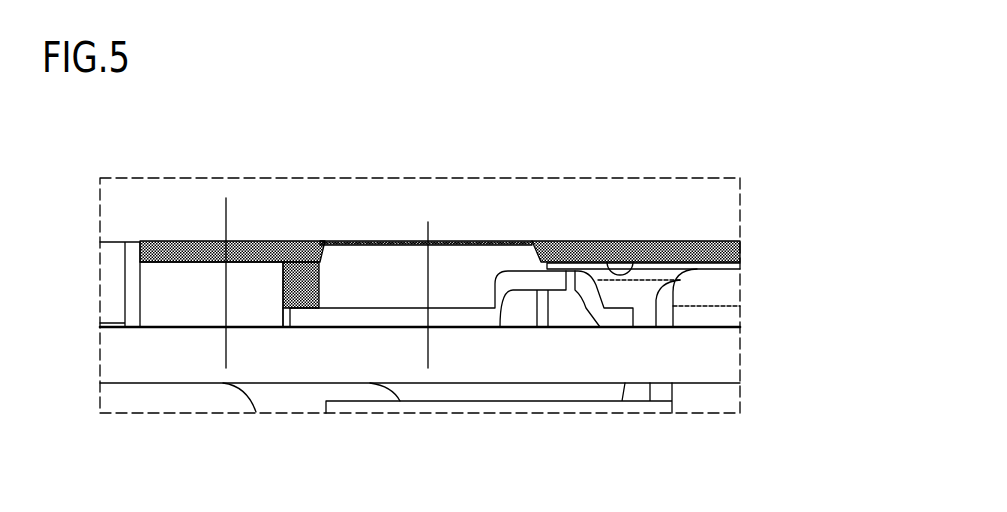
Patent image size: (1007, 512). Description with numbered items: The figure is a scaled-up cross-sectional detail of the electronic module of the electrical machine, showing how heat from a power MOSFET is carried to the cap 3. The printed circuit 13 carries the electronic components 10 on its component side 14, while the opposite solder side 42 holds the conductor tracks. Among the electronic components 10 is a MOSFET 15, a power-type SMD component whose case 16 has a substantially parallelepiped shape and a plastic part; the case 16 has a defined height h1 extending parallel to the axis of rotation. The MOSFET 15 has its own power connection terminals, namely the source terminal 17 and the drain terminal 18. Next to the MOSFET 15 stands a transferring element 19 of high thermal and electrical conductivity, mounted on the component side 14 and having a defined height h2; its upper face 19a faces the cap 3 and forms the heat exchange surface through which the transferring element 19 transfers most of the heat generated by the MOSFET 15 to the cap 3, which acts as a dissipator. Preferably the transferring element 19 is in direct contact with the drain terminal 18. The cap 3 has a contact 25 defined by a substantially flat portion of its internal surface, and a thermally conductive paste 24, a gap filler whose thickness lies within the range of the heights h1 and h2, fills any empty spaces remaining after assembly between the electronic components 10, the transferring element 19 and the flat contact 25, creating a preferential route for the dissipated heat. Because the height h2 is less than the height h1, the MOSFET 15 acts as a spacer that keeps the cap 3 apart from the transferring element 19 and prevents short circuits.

The cap 3 is at (201, 205).
The electronic components 10 is at (667, 245).
The printed circuit 13 is at (712, 354).
The component side 14 is at (720, 289).
The MOSFET 15 is at (477, 250).
The case 16 is at (377, 242).
The source terminal 17 is at (596, 308).
The drain terminal 18 is at (299, 317).
The transferring element 19 is at (172, 297).
The upper face 19a is at (162, 243).
The thermally conductive paste 24 is at (285, 243).
The contact 25 is at (638, 243).
The solder side 42 is at (707, 387).
The height of the MOSFET h1 is at (442, 295).
The height of the transferring element h2 is at (241, 283).